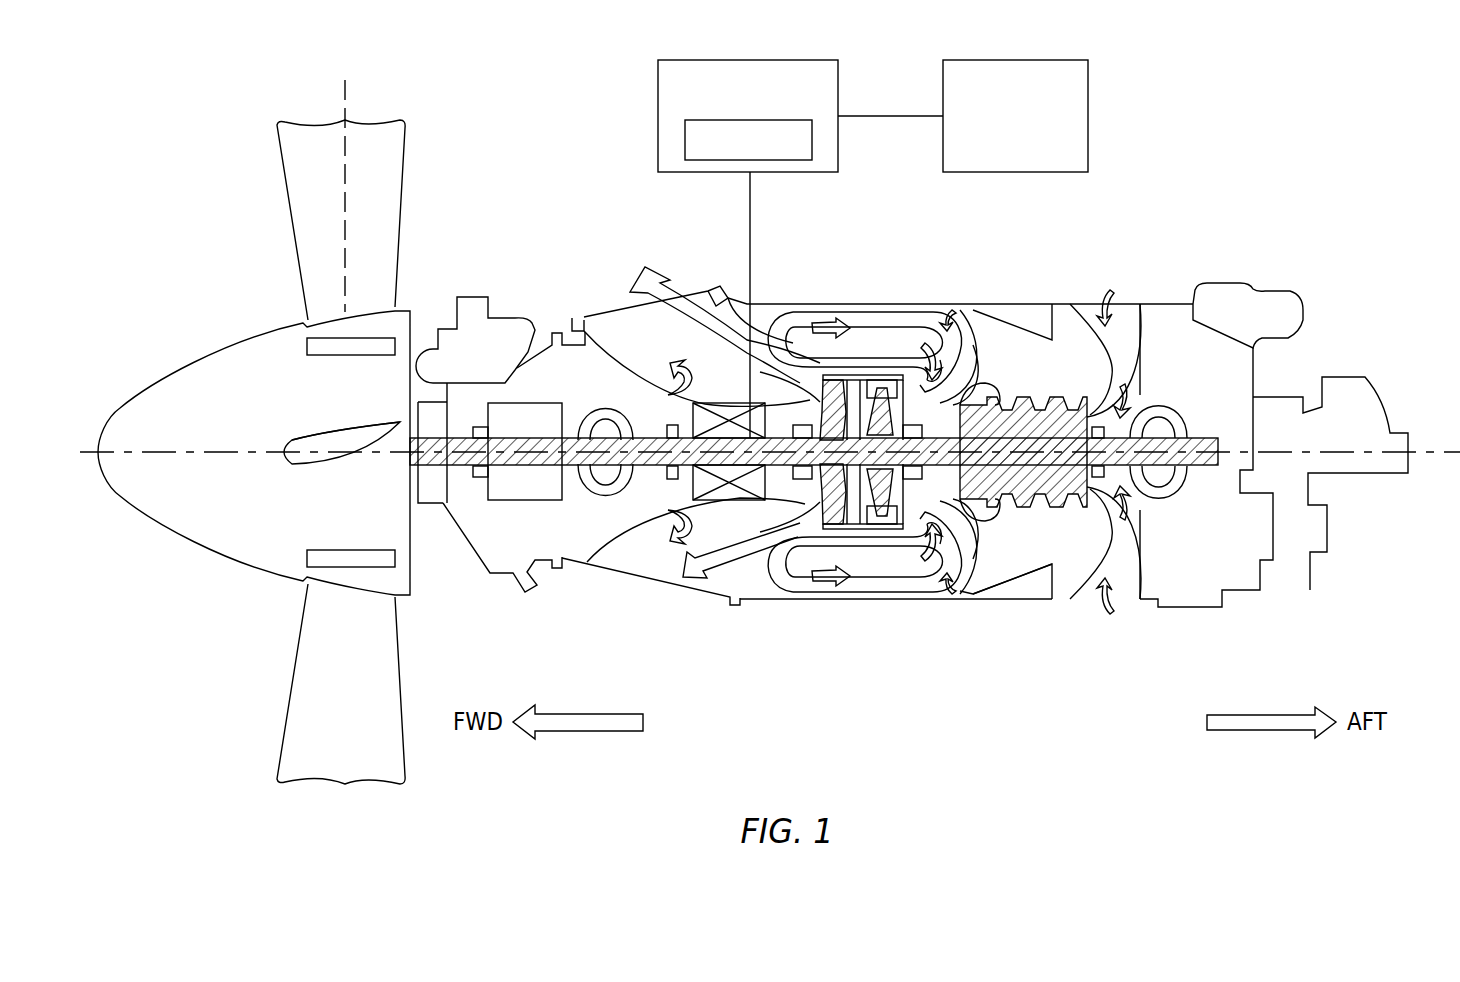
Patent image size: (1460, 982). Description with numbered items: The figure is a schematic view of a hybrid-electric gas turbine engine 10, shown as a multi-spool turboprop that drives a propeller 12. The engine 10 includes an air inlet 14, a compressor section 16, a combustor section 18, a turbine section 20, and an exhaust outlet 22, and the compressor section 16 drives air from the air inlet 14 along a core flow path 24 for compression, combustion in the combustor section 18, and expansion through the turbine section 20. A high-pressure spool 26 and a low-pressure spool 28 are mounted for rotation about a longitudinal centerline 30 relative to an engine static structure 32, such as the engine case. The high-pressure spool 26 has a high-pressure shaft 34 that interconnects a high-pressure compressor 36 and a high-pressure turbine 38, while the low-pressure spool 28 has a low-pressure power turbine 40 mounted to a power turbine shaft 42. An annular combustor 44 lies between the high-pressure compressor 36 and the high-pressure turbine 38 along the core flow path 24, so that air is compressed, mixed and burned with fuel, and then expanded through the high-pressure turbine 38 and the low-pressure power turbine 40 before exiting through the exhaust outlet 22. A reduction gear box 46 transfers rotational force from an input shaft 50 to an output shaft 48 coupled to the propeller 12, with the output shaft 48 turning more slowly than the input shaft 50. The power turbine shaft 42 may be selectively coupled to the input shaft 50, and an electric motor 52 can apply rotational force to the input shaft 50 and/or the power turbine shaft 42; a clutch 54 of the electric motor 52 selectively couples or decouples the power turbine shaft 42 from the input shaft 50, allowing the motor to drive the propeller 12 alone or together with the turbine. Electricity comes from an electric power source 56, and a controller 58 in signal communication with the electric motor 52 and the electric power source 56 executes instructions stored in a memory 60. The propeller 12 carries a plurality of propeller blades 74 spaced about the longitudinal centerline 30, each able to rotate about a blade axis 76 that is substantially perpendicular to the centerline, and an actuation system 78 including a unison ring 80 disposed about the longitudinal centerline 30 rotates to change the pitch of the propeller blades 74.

The gas turbine engine 10 is at (1247, 166).
The propeller 12 is at (233, 263).
The air inlet 14 is at (1122, 298).
The compressor section 16 is at (1016, 523).
The combustor section 18 is at (866, 303).
The turbine section 20 is at (932, 405).
The exhaust outlet 22 is at (600, 303).
The core flow path 24 is at (722, 300).
The high-pressure spool 26 is at (965, 530).
The low-pressure spool 28 is at (797, 487).
The longitudinal centerline 30 is at (1436, 458).
The engine static structure 32 is at (1167, 303).
The high-pressure shaft 34 is at (953, 433).
The high-pressure compressor 36 is at (1042, 427).
The high-pressure turbine 38 is at (898, 500).
The low-pressure power turbine 40 is at (870, 385).
The power turbine shaft 42 is at (837, 375).
The combustor 44 is at (873, 560).
The reduction gear box 46 is at (510, 487).
The output shaft 48 is at (450, 503).
The input shaft 50 is at (623, 480).
The electric motor 52 is at (733, 463).
The clutch 54 is at (733, 443).
The electric power source 56 is at (1088, 100).
The controller 58 is at (658, 90).
The memory 60 is at (685, 142).
The propeller blades 74 is at (390, 158).
The blade axis 76 is at (352, 96).
The actuation system 78 is at (317, 368).
The unison ring 80 is at (365, 355).